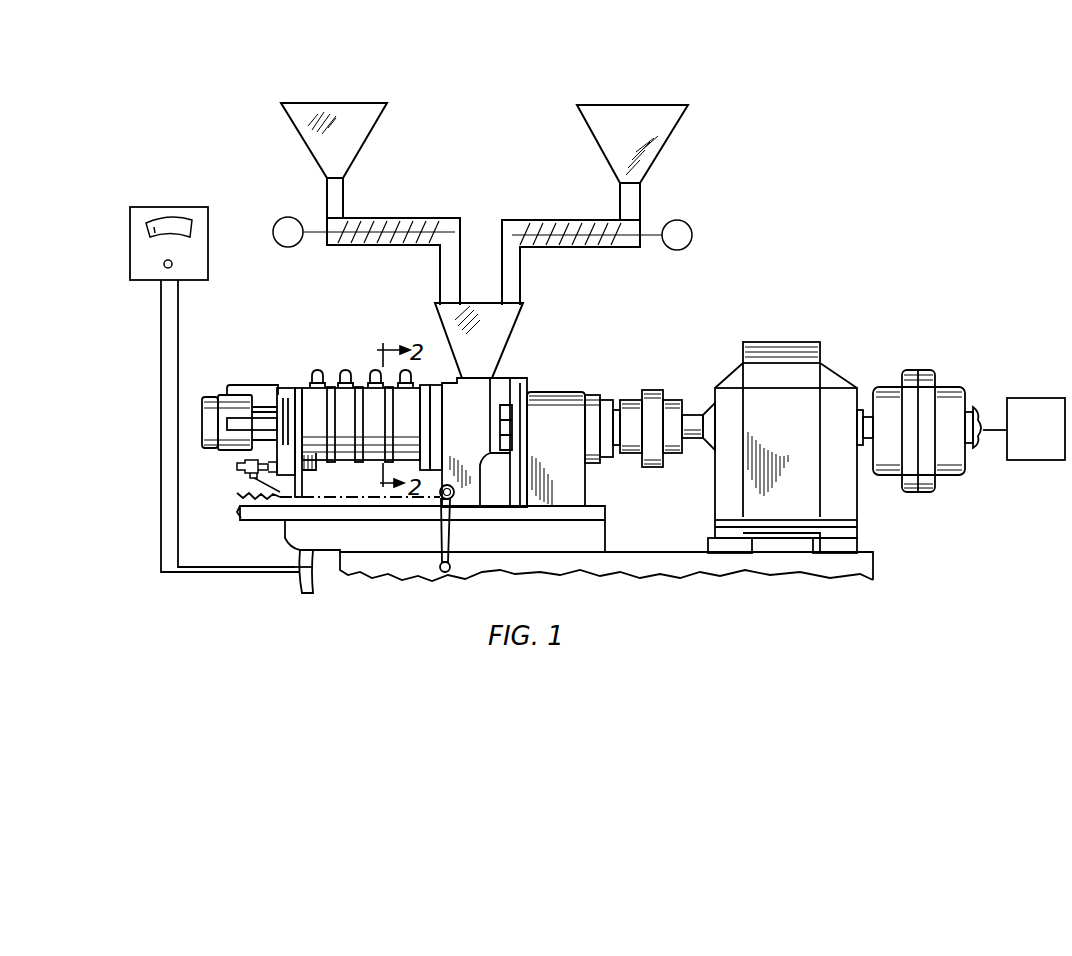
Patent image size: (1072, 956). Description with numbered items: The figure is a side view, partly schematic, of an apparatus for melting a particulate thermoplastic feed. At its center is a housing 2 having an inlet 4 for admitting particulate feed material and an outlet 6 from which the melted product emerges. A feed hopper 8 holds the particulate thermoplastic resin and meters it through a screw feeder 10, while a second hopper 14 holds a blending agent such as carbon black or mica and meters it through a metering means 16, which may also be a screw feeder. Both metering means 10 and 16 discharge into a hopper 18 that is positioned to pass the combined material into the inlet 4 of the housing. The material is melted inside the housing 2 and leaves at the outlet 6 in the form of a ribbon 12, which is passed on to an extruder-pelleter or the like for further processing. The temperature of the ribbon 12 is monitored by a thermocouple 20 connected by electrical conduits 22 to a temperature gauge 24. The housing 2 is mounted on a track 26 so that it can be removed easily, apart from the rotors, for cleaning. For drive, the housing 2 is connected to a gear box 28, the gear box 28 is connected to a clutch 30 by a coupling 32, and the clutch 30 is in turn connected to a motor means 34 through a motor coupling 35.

The housing 2 is at (298, 360).
The inlet 4 is at (497, 377).
The outlet 6 is at (290, 540).
The feed hopper 8 is at (670, 148).
The screw feeder 10 is at (606, 254).
The ribbon 12 is at (302, 585).
The hopper 14 is at (368, 147).
The metering means 16 is at (378, 254).
The hopper 18 is at (478, 303).
The thermocouple 20 is at (313, 572).
The electrical conduits 22 is at (172, 466).
The temperature gauge 24 is at (130, 246).
The track 26 is at (258, 492).
The gear box 28 is at (556, 393).
The clutch 30 is at (783, 342).
The coupling 32 is at (654, 389).
The motor means 34 is at (1022, 400).
The motor coupling 35 is at (913, 370).